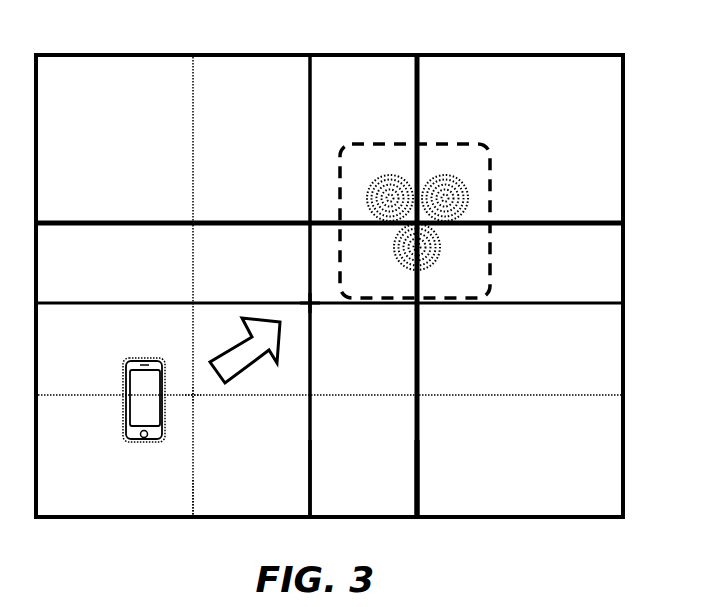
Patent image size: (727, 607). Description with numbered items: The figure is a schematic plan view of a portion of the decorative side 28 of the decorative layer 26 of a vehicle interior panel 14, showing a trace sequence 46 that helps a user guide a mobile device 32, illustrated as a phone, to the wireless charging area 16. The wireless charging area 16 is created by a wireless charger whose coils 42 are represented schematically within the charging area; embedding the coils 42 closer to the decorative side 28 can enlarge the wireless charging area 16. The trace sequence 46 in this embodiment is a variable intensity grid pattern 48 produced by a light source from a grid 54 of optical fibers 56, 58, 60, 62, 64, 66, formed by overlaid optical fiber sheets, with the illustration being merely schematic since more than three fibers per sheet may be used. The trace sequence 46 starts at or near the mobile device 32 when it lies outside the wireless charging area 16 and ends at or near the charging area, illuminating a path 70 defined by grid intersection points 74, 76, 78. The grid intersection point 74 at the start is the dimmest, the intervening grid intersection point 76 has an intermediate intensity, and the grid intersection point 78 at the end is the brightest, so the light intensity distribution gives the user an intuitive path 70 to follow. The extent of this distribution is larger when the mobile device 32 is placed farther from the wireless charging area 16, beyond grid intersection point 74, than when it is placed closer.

The vehicle interior panel 14 is at (604, 43).
The wireless charging area 16 is at (498, 272).
The decorative layer 26 is at (331, 68).
The decorative side 28 is at (390, 63).
The mobile device 32 is at (130, 400).
The coils 42 is at (458, 184).
The trace sequence 46 is at (222, 432).
The variable intensity grid pattern 48 is at (158, 144).
The grid 54 is at (193, 490).
The optical fiber 56 is at (193, 470).
The optical fiber 58 is at (308, 478).
The optical fiber 60 is at (415, 476).
The optical fiber 62 is at (60, 395).
The optical fiber 64 is at (90, 300).
The optical fiber 66 is at (100, 219).
The path 70 is at (236, 352).
The grid intersection point 74 is at (193, 393).
The grid intersection point 76 is at (307, 299).
The grid intersection point 78 is at (412, 221).